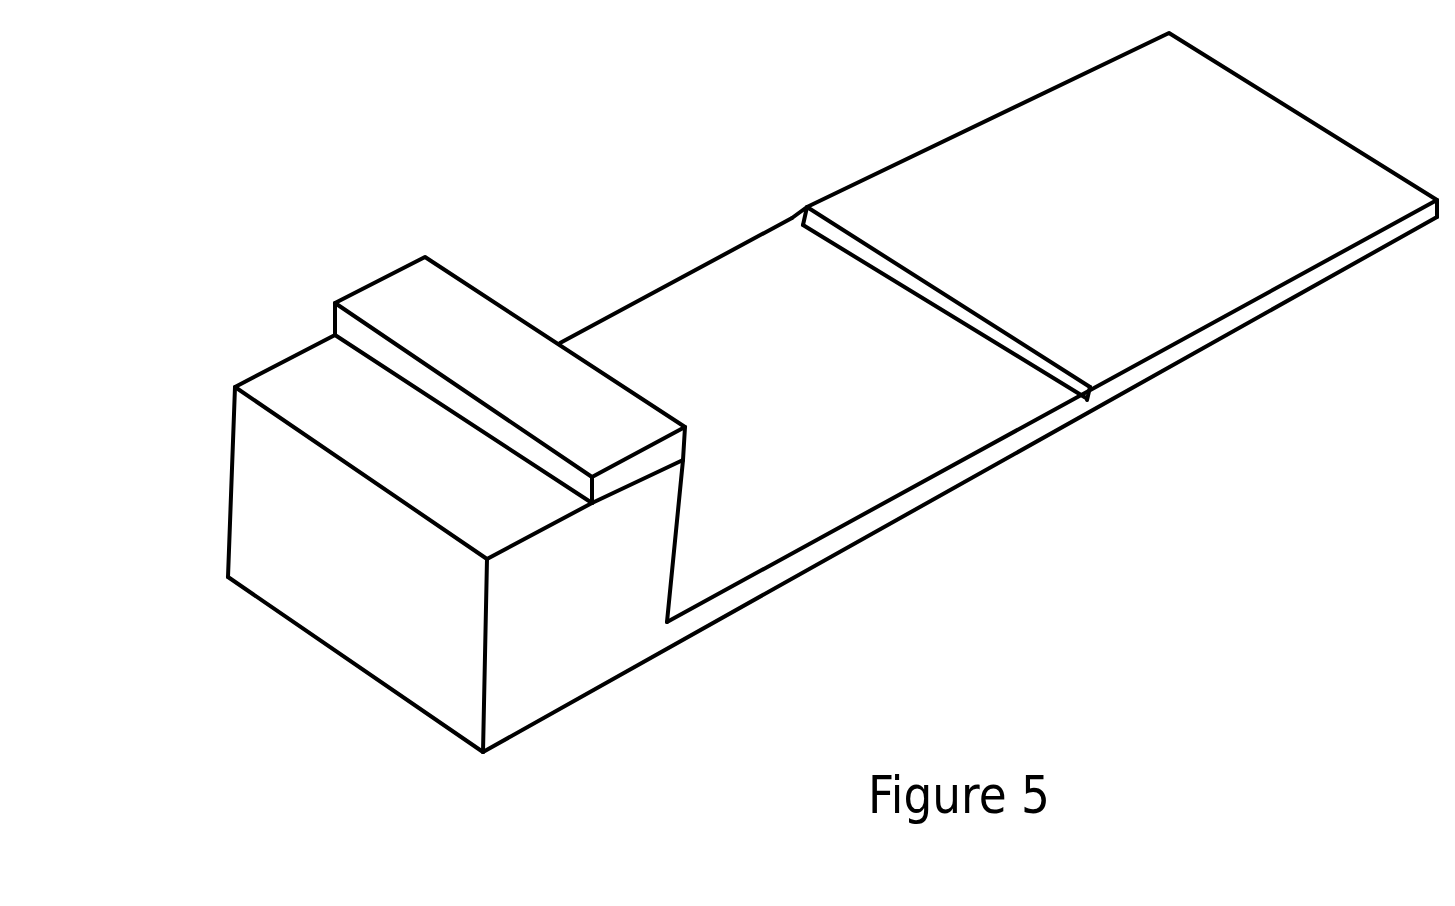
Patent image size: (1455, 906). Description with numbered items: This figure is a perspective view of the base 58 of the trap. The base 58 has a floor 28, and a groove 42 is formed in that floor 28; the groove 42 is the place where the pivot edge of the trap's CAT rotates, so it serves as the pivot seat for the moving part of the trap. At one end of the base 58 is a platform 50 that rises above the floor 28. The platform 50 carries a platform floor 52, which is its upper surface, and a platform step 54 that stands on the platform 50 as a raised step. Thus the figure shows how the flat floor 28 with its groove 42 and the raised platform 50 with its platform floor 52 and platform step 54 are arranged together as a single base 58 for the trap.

The base 58 is at (362, 149).
The platform 50 is at (257, 527).
The platform floor 52 is at (320, 393).
The platform step 54 is at (473, 320).
The floor 28 is at (913, 463).
The groove 42 is at (1073, 385).